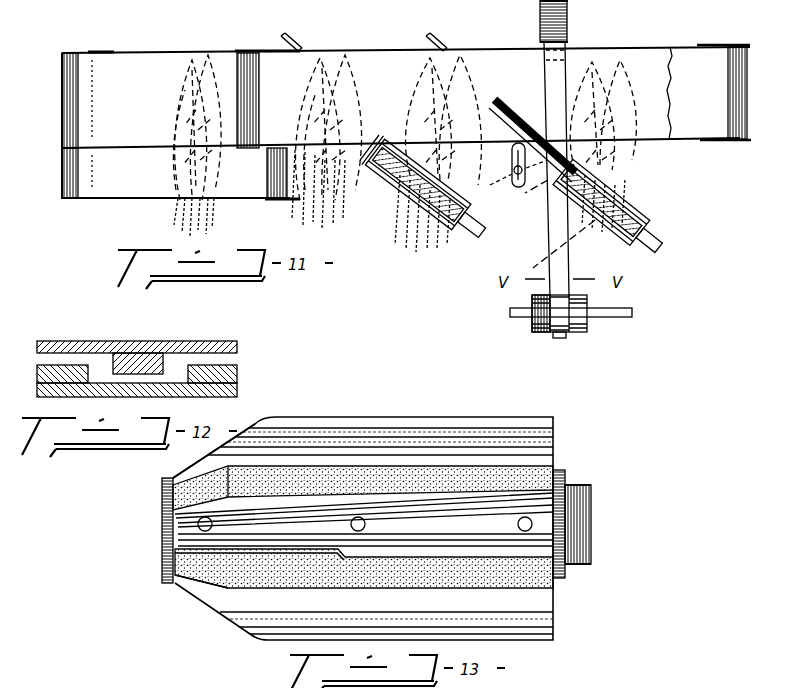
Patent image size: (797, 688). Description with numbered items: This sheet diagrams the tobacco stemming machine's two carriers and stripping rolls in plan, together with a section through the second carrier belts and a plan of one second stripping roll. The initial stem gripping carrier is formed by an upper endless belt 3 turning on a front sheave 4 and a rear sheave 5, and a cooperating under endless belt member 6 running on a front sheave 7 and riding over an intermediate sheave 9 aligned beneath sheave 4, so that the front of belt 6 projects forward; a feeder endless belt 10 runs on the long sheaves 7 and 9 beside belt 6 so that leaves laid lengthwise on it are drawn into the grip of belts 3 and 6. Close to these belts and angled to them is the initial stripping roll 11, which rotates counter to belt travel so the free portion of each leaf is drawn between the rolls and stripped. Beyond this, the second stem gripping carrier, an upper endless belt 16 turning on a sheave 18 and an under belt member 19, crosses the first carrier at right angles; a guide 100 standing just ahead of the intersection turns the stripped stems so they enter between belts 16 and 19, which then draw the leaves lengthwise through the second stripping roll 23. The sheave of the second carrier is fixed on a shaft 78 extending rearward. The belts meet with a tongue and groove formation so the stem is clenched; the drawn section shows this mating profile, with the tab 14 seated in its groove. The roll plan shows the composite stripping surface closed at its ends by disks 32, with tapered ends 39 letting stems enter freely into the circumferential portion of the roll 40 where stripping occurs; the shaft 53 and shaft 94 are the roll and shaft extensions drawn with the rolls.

In FIG. 11, the upper endless belt 3 is at (404, 153).
In FIG. 11, the front sheave 4 is at (243, 50).
In FIG. 11, the rear sheave 5 is at (740, 142).
In FIG. 11, the under endless belt member 6 is at (89, 100).
In FIG. 11, the front sheave 7 is at (104, 42).
In FIG. 11, the intermediate sheave 9 is at (250, 199).
In FIG. 11, the feeder endless belt 10 is at (96, 173).
In FIG. 11, the initial stripping roll 11 is at (447, 222).
In FIG. 12, the guide tab 14 is at (132, 358).
In FIG. 11, the upper endless belt 16 is at (562, 338).
In FIG. 12, the upper endless belt 16 is at (237, 346).
In FIG. 11, the sheave 18 is at (540, 332).
In FIG. 12, the under belt member 19 is at (237, 390).
In FIG. 11, the second stripping roll 23 is at (652, 226).
In FIG. 13, the disk 32 is at (162, 566).
In FIG. 13, the tapered end 39 is at (182, 465).
In FIG. 13, the roll 40 is at (342, 410).
In FIG. 11, the roller shaft 53 is at (466, 239).
In FIG. 11, the shaft 78 is at (622, 318).
In FIG. 11, the roller shaft 94 is at (660, 251).
In FIG. 11, the guide 100 is at (513, 177).